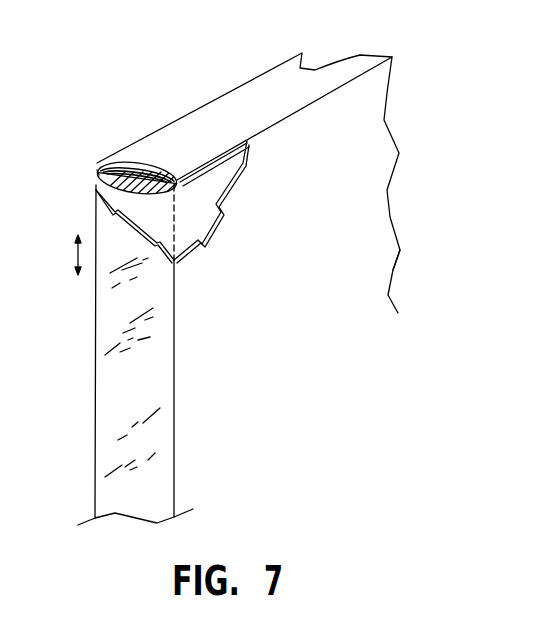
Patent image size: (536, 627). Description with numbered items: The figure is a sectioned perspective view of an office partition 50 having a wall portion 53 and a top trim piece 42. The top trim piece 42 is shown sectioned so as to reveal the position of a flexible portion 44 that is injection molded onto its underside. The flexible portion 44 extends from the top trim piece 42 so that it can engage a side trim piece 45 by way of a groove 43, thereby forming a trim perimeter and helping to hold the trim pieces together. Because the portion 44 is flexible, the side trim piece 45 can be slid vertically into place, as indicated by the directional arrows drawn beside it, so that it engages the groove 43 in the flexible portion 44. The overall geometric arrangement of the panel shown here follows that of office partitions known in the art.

The top trim piece 42 is at (214, 102).
The groove 43 is at (107, 162).
The flexible portion 44 is at (97, 175).
The side trim piece 45 is at (110, 322).
The office partition 50 is at (405, 114).
The wall portion 53 is at (322, 257).